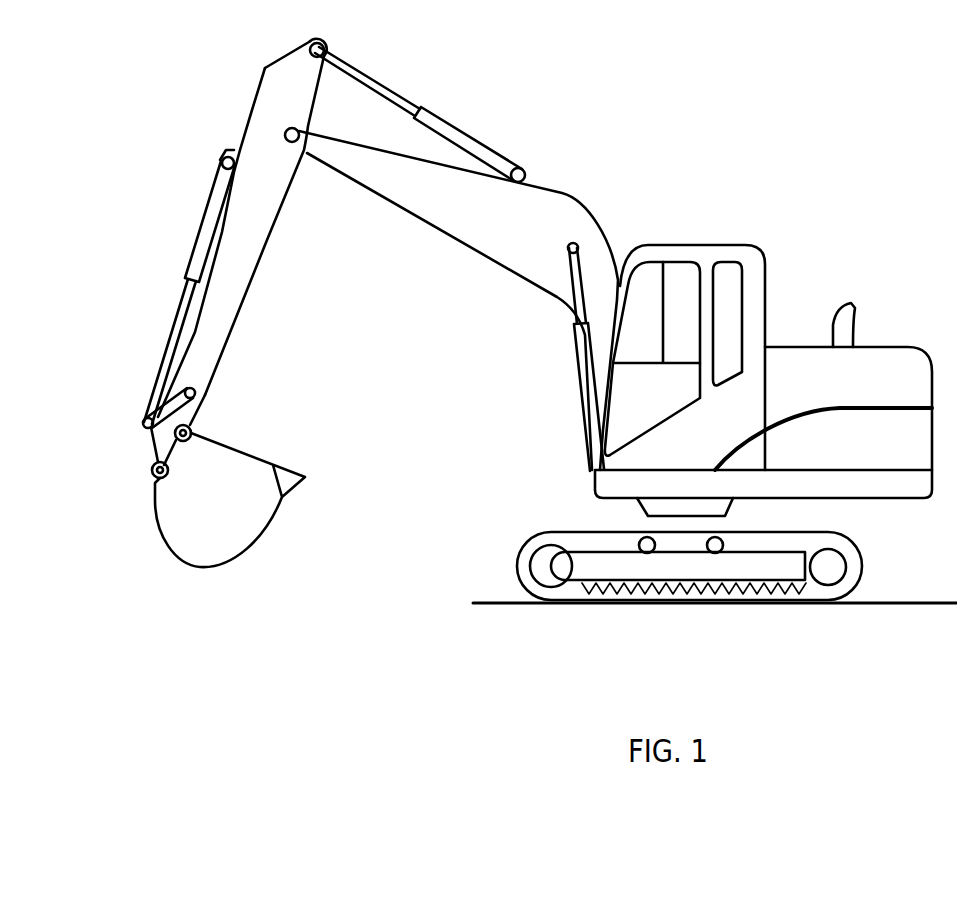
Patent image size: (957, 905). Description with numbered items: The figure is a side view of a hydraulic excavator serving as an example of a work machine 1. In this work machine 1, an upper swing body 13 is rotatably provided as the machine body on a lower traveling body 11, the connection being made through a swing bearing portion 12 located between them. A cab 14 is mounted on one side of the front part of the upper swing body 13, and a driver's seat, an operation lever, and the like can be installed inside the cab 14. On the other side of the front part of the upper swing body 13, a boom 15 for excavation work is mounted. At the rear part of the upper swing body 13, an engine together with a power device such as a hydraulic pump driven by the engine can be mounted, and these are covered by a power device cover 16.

The work machine 1 is at (730, 430).
The lower traveling body 11 is at (535, 535).
The swing bearing portion 12 is at (637, 516).
The upper swing body 13 is at (605, 485).
The cab 14 is at (595, 398).
The boom 15 is at (570, 195).
The power device cover 16 is at (888, 367).